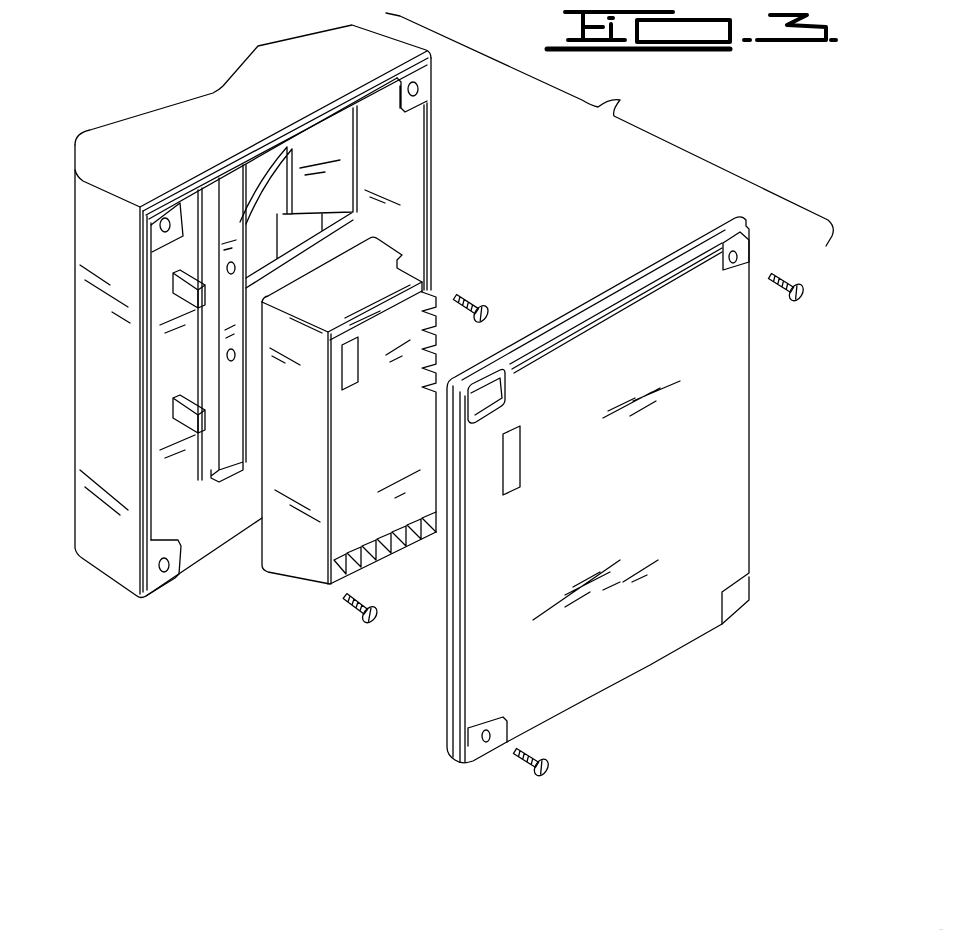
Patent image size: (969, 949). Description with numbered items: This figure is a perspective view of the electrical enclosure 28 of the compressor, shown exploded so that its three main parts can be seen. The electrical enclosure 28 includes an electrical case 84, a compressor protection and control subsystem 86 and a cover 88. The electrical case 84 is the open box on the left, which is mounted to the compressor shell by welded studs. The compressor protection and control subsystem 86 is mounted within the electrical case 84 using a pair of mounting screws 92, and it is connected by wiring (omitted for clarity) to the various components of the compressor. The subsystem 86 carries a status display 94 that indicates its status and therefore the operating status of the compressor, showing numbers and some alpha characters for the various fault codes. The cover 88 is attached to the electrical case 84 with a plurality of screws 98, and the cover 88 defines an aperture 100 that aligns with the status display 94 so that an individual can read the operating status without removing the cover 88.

The electrical enclosure 28 is at (157, 86).
The electrical case 84 is at (90, 360).
The compressor protection and control subsystem 86 is at (282, 562).
The cover 88 is at (685, 500).
The mounting screws 92 is at (497, 314).
The status display 94 is at (348, 380).
The screws 98 is at (806, 303).
The aperture 100 is at (508, 467).